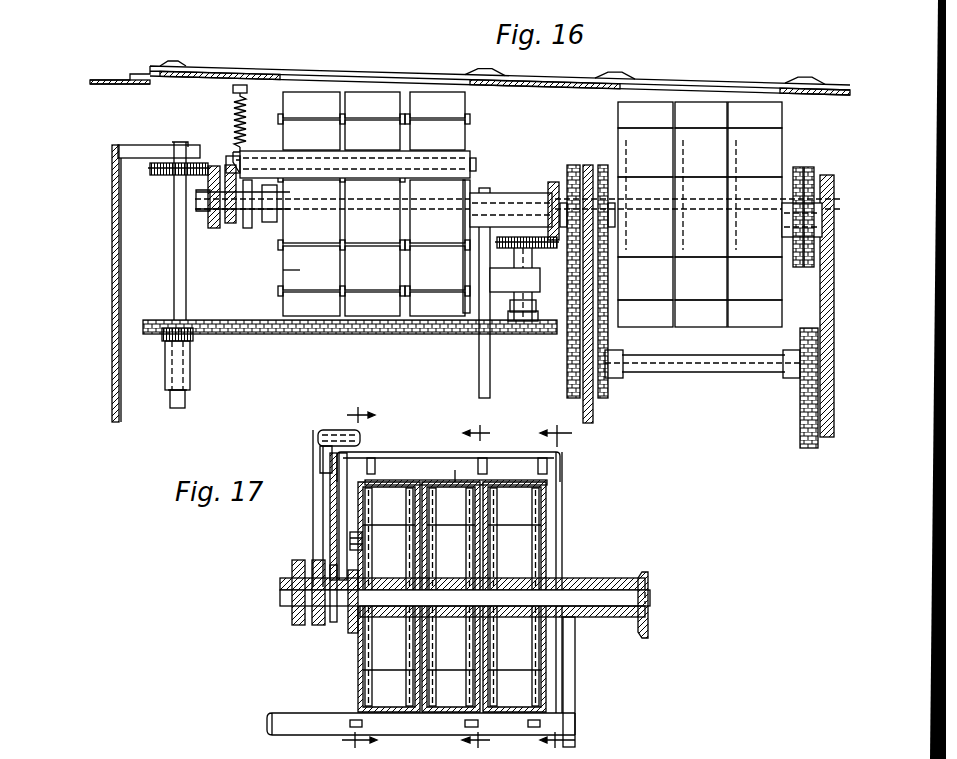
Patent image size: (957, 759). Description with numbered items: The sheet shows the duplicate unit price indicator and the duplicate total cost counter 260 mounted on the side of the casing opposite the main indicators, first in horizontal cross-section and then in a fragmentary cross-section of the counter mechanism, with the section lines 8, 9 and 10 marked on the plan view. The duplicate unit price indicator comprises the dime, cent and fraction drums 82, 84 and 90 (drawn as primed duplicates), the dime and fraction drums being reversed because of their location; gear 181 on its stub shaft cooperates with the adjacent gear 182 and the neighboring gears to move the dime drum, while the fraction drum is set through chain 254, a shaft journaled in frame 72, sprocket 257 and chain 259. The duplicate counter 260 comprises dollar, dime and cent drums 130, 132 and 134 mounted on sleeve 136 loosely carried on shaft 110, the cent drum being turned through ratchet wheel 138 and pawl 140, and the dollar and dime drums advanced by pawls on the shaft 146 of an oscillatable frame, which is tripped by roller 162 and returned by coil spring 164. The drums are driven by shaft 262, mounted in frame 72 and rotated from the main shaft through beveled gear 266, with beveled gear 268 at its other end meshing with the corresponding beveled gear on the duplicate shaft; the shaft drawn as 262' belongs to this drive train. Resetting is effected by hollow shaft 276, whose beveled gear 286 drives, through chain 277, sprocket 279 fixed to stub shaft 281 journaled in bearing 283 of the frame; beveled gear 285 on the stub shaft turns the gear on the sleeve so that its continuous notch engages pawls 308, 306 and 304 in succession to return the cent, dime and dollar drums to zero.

In FIG. 16, the frame 72 is at (112, 311).
In FIG. 16, the dime drum 82 is at (756, 104).
In FIG. 16, the cent drum 84 is at (707, 104).
In FIG. 16, the fraction drum 90 is at (655, 104).
In FIG. 16, the shaft 110 is at (231, 218).
In FIG. 17, the shaft 110 is at (350, 602).
In FIG. 16, the dollar drum 130 is at (432, 100).
In FIG. 17, the dollar drum 130 is at (510, 492).
In FIG. 16, the dime drum 132 is at (366, 100).
In FIG. 17, the dime drum 132 is at (437, 492).
In FIG. 16, the cent drum 134 is at (308, 100).
In FIG. 17, the cent drum 134 is at (393, 492).
In FIG. 17, the bushing or hollow shaft 136 is at (445, 577).
In FIG. 17, the ratchet wheel 138 is at (348, 568).
In FIG. 17, the pawl 140 is at (350, 540).
In FIG. 16, the shaft of oscillatable frame 146 is at (445, 158).
In FIG. 17, the shaft of oscillatable frame 146 is at (455, 470).
In FIG. 16, the roller 162 is at (236, 160).
In FIG. 17, the roller 162 is at (329, 432).
In FIG. 16, the coil spring 164 is at (233, 103).
In FIG. 16, the gear 181 is at (810, 166).
In FIG. 16, the gear 182 is at (799, 165).
In FIG. 16, the chain 254 is at (800, 407).
In FIG. 16, the sprocket 257 is at (620, 378).
In FIG. 16, the chain 259 is at (608, 338).
In FIG. 16, the duplicate total cost counter 260 is at (276, 275).
In FIG. 16, the shaft 262 is at (201, 398).
In FIG. 16, the shaft 262' is at (702, 357).
In FIG. 16, the beveled gear 266 is at (222, 235).
In FIG. 17, the beveled gear 266 is at (318, 600).
In FIG. 16, the beveled gear 268 is at (162, 178).
In FIG. 16, the hollow shaft 276 is at (190, 370).
In FIG. 16, the chain 277 is at (312, 334).
In FIG. 16, the sprocket 279 is at (530, 322).
In FIG. 16, the stub shaft 281 is at (522, 312).
In FIG. 16, the bearing 283 is at (537, 280).
In FIG. 16, the beveled gear 285 is at (508, 237).
In FIG. 16, the beveled gear 286 is at (193, 336).
In FIG. 17, the pawl 304 is at (546, 572).
In FIG. 17, the pawl 306 is at (487, 576).
In FIG. 17, the pawl 308 is at (372, 568).
In FIG. 17, the section line 8 is at (557, 586).
In FIG. 17, the section line 9 is at (476, 586).
In FIG. 17, the section line 10 is at (359, 577).